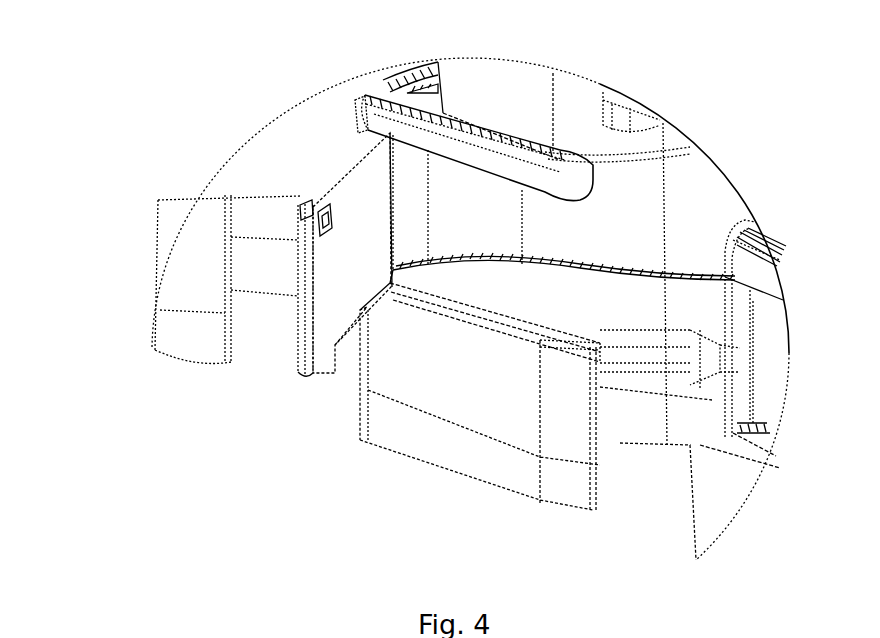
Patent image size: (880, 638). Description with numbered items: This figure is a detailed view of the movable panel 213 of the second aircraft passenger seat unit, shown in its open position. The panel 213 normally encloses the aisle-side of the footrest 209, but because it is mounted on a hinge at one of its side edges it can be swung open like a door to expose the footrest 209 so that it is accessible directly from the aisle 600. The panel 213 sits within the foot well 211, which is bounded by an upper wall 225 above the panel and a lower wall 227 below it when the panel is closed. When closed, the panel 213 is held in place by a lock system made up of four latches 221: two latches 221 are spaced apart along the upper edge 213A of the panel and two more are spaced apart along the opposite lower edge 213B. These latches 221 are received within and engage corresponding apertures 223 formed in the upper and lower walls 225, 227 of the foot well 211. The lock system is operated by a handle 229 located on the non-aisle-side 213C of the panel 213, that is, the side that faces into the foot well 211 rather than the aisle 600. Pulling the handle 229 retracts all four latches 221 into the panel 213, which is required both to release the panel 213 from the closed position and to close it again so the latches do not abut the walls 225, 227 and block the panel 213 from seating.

The aisle 600 is at (305, 518).
The upper wall 225 is at (383, 117).
The latches 221 is at (365, 132).
The upper edge 213A is at (330, 178).
The panel 213 is at (262, 262).
The footrest 209 is at (628, 297).
The foot well 211 is at (590, 296).
The handle 229 is at (318, 230).
The non-aisle-side 213C is at (328, 297).
The lower edge 213B is at (334, 352).
The lower wall 227 is at (445, 380).
The apertures 223 is at (558, 342).